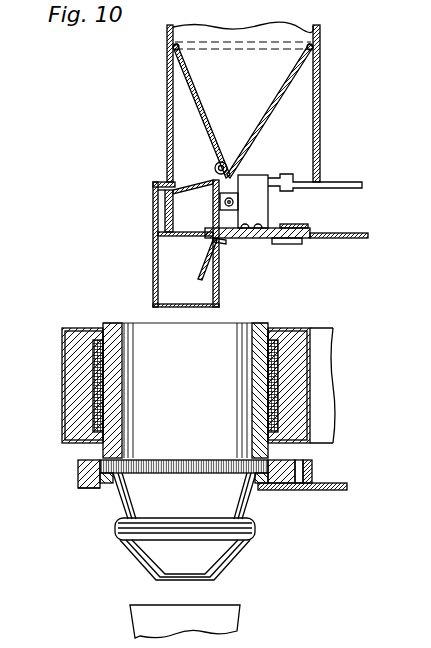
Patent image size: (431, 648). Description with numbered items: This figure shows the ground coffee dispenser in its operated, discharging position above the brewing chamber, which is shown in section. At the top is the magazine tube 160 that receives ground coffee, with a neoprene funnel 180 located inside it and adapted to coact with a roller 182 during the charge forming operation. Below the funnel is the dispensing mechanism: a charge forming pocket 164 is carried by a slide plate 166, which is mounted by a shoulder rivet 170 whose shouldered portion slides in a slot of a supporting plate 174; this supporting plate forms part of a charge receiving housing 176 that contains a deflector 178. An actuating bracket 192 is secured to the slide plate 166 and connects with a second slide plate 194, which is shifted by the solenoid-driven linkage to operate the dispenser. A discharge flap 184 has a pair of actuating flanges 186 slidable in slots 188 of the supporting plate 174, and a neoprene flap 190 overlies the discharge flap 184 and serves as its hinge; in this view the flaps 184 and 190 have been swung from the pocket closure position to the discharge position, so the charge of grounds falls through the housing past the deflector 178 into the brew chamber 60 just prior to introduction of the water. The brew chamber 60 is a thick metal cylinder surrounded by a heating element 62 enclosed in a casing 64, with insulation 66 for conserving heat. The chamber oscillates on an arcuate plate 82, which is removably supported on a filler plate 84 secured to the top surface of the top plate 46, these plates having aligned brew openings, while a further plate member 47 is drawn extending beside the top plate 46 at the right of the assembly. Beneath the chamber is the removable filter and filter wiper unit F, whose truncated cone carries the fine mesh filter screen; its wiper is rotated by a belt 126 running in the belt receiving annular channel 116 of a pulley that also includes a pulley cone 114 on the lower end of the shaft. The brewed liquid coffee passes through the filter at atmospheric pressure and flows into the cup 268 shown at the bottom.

The magazine tube 160 is at (321, 31).
The neoprene funnel 180 is at (285, 96).
The roller 182 is at (215, 164).
The charge receiving housing 176 is at (152, 186).
The charge forming pocket 164 is at (166, 216).
The neoprene flap 190 is at (208, 254).
The deflector 178 is at (157, 285).
The discharge flap 184 is at (202, 279).
The actuating flanges 186 is at (222, 244).
The actuating bracket 192 is at (265, 182).
The slide plate 194 is at (363, 185).
The slide plate 166 is at (302, 230).
The slots 188 is at (273, 240).
The shoulder rivet 170 is at (302, 243).
The supporting plate 174 is at (365, 239).
The brew chamber 60 is at (268, 324).
The casing 64 is at (66, 328).
The insulation 66 is at (68, 375).
The heating element 62 is at (280, 385).
The arcuate plate 82 is at (78, 466).
The filler plate 84 is at (100, 480).
The top plate 46 is at (92, 487).
The base plate 47 is at (312, 471).
The filter and filter wiper unit F is at (254, 509).
The belt 126 is at (115, 533).
The belt receiving annular channel 116 is at (248, 538).
The pulley cone 114 is at (152, 560).
The cup 268 is at (243, 618).